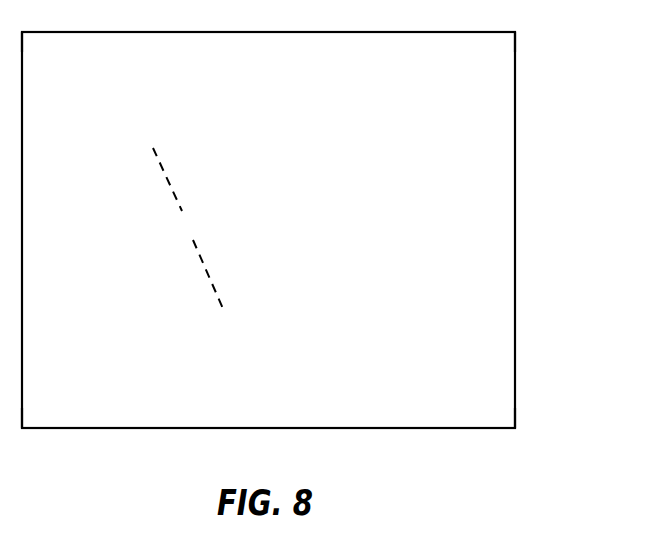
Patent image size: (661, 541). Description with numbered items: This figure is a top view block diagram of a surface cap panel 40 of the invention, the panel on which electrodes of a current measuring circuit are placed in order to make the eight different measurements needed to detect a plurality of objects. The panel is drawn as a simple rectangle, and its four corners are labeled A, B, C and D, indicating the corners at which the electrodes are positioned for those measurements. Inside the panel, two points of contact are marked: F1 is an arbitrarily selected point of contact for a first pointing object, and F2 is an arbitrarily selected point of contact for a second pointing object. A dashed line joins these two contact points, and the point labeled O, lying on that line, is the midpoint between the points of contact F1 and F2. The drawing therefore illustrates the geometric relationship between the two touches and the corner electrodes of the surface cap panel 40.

The surface cap panel 40 is at (515, 247).
The corner A is at (38, 48).
The corner B is at (496, 48).
The corner C is at (37, 413).
The corner D is at (496, 413).
The point of contact for a first pointing object F1 is at (151, 161).
The point of contact for a second pointing object F2 is at (220, 291).
The midpoint O is at (187, 225).